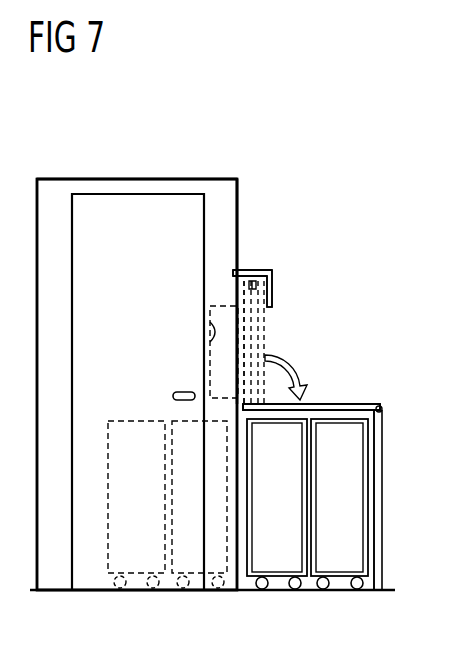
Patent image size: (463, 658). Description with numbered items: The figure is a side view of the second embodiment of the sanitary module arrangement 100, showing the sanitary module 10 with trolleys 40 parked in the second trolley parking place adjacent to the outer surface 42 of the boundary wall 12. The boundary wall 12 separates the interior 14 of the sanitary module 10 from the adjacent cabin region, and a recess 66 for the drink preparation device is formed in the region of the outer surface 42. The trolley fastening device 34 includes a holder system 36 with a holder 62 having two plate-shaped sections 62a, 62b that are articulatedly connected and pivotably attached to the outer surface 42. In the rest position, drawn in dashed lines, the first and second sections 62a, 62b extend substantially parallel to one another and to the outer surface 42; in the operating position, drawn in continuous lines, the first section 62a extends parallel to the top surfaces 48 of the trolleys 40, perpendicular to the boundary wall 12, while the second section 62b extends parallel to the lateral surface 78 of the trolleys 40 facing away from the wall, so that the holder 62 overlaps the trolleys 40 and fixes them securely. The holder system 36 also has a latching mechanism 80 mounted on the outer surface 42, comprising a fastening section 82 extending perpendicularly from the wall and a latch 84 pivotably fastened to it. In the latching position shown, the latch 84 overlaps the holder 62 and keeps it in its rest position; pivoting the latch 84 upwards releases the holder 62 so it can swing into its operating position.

The sanitary module arrangement 100 is at (70, 157).
The sanitary module 10 is at (121, 167).
The boundary wall 12 is at (248, 184).
The outer surface 42 is at (240, 225).
The interior 14 is at (128, 332).
The fastening section 82 is at (237, 258).
The latching mechanism 80 is at (272, 270).
The latch 84 is at (272, 298).
The holder 62 is at (264, 268).
The first section 62a is at (243, 299).
The second section 62b is at (265, 330).
The recess 66 is at (218, 342).
The top surfaces 48 is at (187, 413).
The trolleys 40 is at (197, 592).
The trolley fastening device 34 is at (337, 337).
The holder system 36 is at (366, 386).
The lateral surface 78 is at (376, 484).